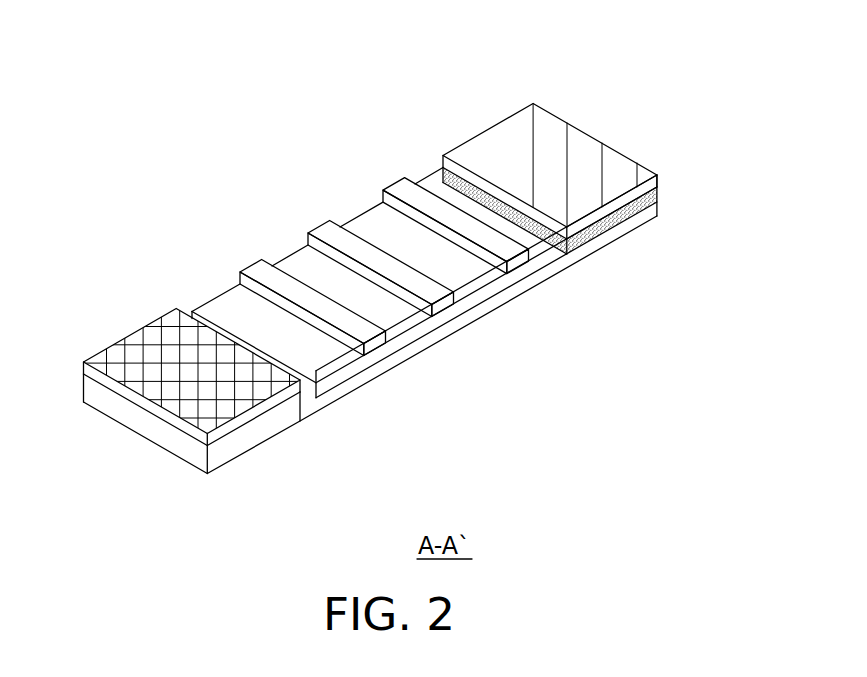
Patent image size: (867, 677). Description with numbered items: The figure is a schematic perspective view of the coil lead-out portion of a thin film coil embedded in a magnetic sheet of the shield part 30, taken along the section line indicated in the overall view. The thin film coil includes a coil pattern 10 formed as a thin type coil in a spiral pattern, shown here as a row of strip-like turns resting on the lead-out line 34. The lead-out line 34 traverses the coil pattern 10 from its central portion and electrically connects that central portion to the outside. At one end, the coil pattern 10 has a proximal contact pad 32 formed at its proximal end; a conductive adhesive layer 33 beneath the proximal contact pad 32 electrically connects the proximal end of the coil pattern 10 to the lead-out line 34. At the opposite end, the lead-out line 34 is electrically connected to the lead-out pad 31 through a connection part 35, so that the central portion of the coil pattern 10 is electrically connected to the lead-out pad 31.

The shield part 30 is at (186, 41).
The lead-out pad 31 is at (147, 345).
The proximal contact pad 32 is at (517, 141).
The conductive adhesive layer 33 is at (598, 232).
The lead-out line 34 is at (378, 368).
The connection part 35 is at (423, 330).
The coil pattern 10 is at (255, 271).